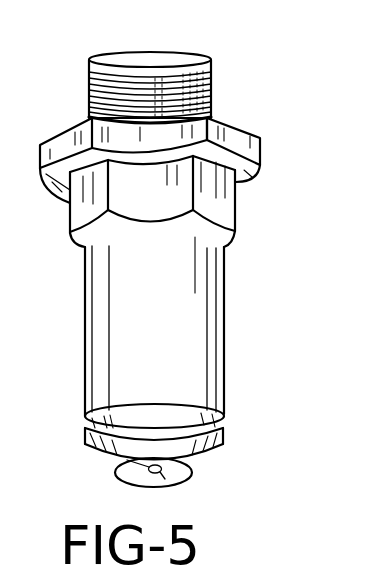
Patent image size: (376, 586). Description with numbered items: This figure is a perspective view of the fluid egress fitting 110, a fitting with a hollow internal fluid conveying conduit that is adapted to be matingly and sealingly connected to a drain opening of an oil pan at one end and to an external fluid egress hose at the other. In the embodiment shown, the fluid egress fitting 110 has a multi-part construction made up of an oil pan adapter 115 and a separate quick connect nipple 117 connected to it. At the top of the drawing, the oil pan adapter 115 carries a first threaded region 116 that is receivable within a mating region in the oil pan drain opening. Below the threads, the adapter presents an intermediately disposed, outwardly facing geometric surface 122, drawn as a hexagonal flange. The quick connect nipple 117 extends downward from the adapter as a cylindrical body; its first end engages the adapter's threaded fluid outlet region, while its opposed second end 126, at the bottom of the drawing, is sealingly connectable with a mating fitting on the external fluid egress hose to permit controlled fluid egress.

The fluid egress fitting 110 is at (258, 261).
The oil pan adapter 115 is at (86, 90).
The first threaded region 116 is at (213, 97).
The quick connect nipple 117 is at (100, 318).
The outwardly facing geometric surface 122 is at (263, 138).
The second end 126 is at (226, 449).